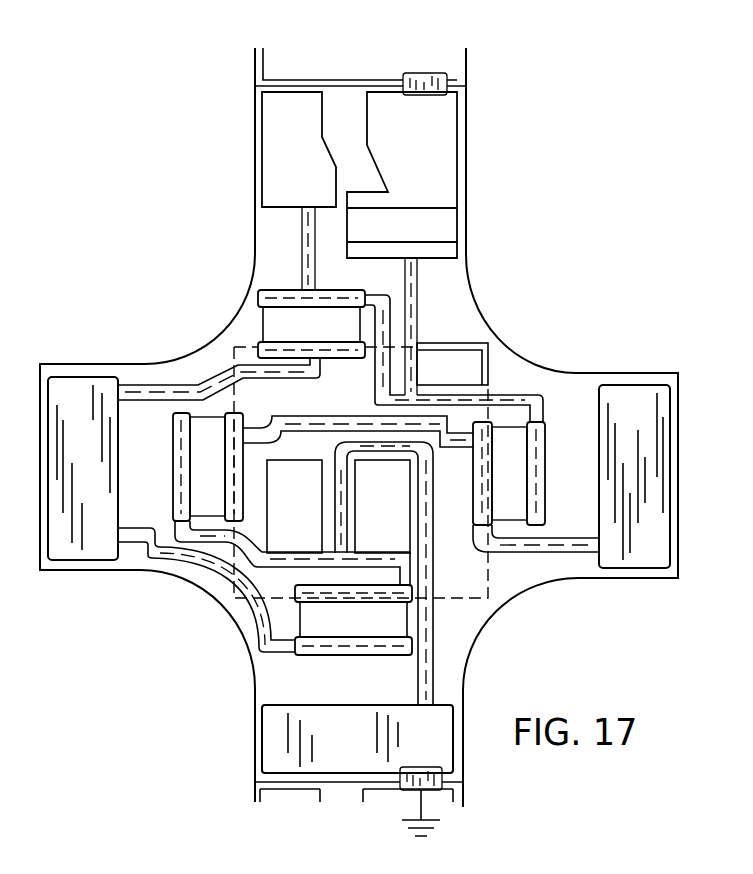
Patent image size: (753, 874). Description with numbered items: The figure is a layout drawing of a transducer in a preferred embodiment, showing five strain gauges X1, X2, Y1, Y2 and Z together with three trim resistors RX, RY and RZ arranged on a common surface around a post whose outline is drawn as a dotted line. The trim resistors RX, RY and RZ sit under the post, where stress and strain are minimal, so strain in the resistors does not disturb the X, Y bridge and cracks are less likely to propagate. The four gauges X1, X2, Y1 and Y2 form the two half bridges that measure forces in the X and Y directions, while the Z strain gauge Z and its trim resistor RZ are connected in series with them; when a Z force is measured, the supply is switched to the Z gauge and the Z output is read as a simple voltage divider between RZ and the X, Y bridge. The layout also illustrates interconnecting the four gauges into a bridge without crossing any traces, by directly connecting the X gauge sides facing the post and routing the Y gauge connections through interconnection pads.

The Z strain gauge Z is at (402, 243).
The second Y strain gauge Y2 is at (311, 324).
The Z trim resistor RZ is at (452, 364).
The first X strain gauge X1 is at (208, 467).
The second X strain gauge X2 is at (509, 473).
The X trim resistor RX is at (294, 506).
The Y trim resistor RY is at (384, 573).
The first Y strain gauge Y1 is at (353, 620).